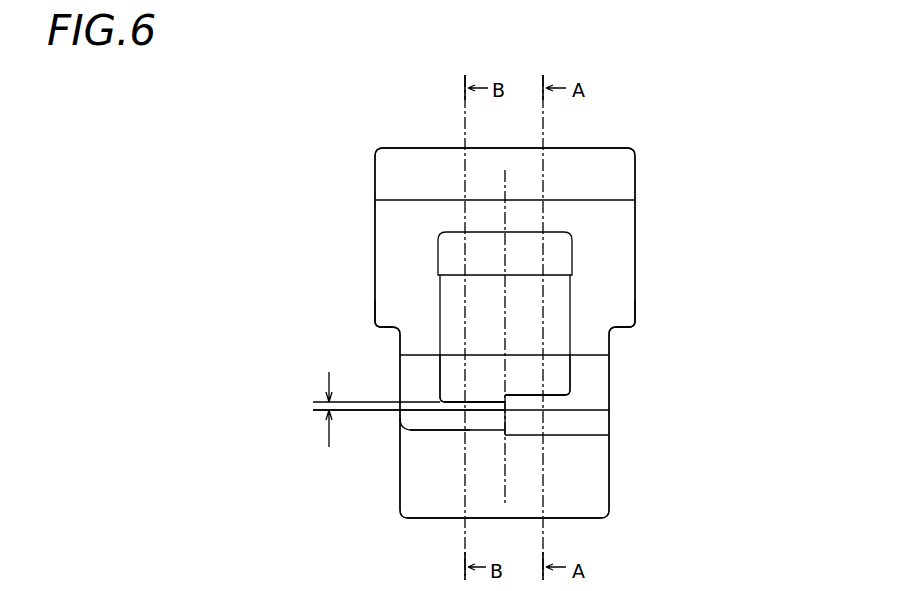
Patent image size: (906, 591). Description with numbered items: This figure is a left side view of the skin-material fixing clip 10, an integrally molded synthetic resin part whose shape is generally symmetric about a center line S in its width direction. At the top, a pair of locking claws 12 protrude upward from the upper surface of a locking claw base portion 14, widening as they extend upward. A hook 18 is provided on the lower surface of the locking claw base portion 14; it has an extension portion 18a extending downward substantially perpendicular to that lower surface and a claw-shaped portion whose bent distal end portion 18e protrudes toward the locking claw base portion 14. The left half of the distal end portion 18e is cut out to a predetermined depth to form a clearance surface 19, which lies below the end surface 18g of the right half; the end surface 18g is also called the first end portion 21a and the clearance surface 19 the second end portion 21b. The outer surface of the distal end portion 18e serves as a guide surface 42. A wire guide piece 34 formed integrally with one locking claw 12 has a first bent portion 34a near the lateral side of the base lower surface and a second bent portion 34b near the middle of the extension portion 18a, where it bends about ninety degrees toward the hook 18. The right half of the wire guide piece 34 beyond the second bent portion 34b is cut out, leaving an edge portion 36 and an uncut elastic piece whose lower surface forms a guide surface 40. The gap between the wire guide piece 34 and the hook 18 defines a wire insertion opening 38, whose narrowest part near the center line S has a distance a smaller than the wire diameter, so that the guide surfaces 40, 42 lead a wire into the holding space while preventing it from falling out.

The skin-material fixing clip 10 is at (700, 138).
The locking claw 12 is at (617, 223).
The locking claw base portion 14 is at (613, 308).
The hook 18 is at (440, 502).
The extension portion 18a is at (600, 363).
The distal end portion 18e is at (560, 419).
The end surface 18g is at (573, 412).
The clearance surface 19 is at (428, 430).
The first end portion 21a is at (573, 411).
The second end portion 21b is at (405, 424).
The wire guide piece 34 is at (438, 302).
The first bent portion 34a is at (457, 273).
The second bent portion 34b is at (457, 357).
The edge portion 36 is at (555, 397).
The wire insertion opening 38 is at (452, 420).
The guide surface 40 is at (457, 400).
The guide surface 42 is at (525, 423).
The center line S is at (505, 170).
The distance a is at (375, 399).